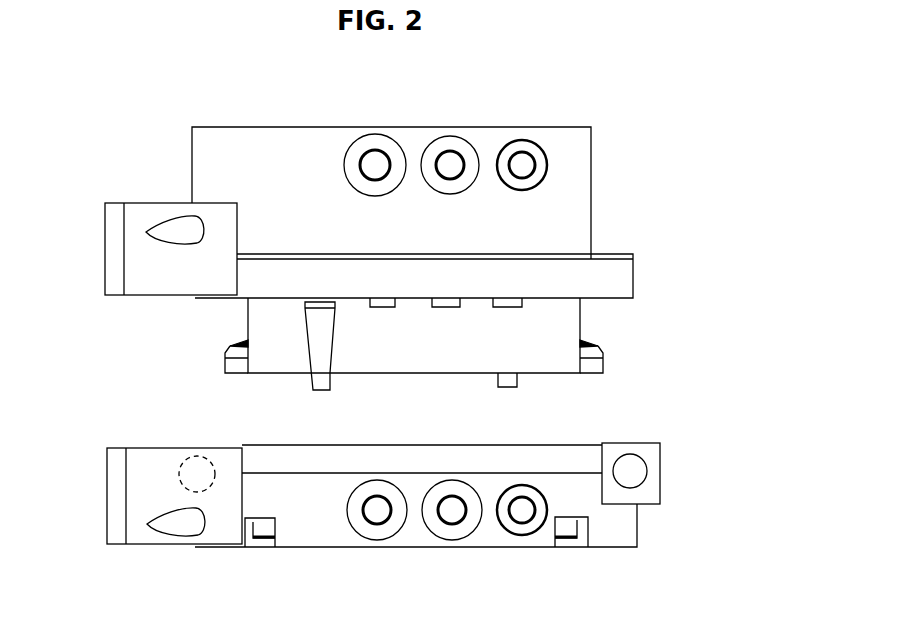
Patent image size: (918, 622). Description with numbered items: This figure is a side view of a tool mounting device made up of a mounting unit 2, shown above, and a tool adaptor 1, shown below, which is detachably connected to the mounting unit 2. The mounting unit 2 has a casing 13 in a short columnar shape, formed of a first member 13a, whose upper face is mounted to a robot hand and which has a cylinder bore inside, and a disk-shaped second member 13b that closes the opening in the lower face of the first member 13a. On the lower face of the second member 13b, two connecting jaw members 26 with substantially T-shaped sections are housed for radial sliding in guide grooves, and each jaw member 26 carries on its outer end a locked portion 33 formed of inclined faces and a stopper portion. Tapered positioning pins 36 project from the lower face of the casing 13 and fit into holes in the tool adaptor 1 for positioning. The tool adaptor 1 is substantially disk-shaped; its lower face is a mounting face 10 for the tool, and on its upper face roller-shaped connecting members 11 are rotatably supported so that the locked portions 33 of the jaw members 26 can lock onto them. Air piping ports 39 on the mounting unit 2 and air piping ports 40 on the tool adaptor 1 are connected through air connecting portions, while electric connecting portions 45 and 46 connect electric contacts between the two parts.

The tool adaptor 1 is at (382, 497).
The mounting unit 2 is at (405, 251).
The mounting face 10 is at (439, 521).
The connecting member 11 is at (640, 468).
The casing 13 is at (485, 186).
The first member 13a is at (454, 166).
The second member 13b is at (627, 271).
The jaw member 26 is at (225, 358).
The locked portion 33 is at (232, 341).
The positioning pin 36 is at (320, 377).
The air piping port 39 is at (448, 162).
The air piping port 40 is at (452, 512).
The electric connecting portion 45 is at (90, 195).
The electric connecting portion 46 is at (102, 497).